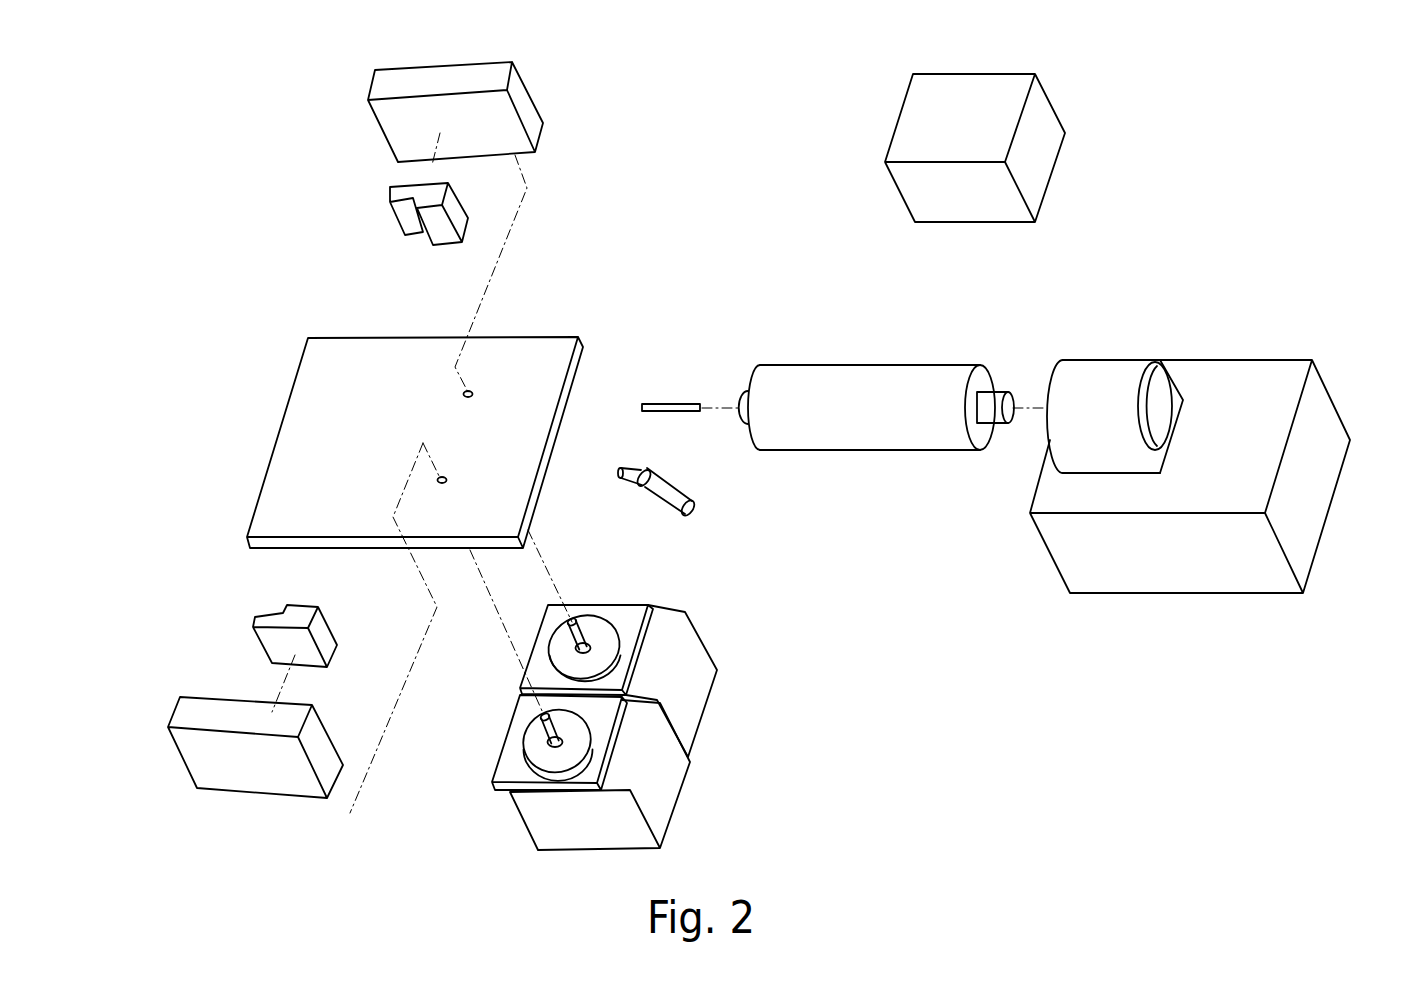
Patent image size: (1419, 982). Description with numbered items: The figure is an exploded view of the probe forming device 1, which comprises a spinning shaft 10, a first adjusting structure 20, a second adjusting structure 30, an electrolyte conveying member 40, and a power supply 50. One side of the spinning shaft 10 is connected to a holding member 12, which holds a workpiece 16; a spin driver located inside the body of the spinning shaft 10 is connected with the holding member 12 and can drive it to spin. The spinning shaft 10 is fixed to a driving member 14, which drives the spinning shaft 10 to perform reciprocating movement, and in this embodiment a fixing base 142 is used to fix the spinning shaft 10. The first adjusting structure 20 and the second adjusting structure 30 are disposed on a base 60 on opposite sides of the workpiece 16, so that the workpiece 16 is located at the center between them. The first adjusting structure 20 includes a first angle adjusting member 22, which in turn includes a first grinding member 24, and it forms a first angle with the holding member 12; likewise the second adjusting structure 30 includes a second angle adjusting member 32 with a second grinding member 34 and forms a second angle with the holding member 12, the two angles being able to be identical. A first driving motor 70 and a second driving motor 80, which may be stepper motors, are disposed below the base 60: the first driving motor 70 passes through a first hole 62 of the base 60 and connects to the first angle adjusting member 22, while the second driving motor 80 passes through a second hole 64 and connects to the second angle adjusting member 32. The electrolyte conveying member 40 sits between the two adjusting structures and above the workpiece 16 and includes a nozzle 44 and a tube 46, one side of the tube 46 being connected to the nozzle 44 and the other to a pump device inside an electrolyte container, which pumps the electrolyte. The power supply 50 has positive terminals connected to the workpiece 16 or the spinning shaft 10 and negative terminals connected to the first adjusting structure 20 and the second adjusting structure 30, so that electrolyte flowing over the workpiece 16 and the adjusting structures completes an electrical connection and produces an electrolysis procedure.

The probe forming device 1 is at (1304, 119).
The spinning shaft 10 is at (873, 380).
The holding member 12 is at (745, 392).
The driving member 14 is at (1278, 433).
The fixing base 142 is at (1112, 373).
The workpiece 16 is at (682, 406).
The first adjusting structure 20 is at (349, 63).
The first angle adjusting member 22 is at (395, 118).
The first grinding member 24 is at (403, 210).
The second adjusting structure 30 is at (147, 670).
The second angle adjusting member 32 is at (203, 752).
The second grinding member 34 is at (268, 642).
The electrolyte conveying member 40 is at (717, 531).
The nozzle 44 is at (628, 470).
The tube 46 is at (675, 493).
The power supply 50 is at (927, 107).
The base 60 is at (322, 390).
The first hole 62 is at (468, 390).
The second hole 64 is at (442, 485).
The first driving motor 70 is at (683, 708).
The second driving motor 80 is at (660, 800).